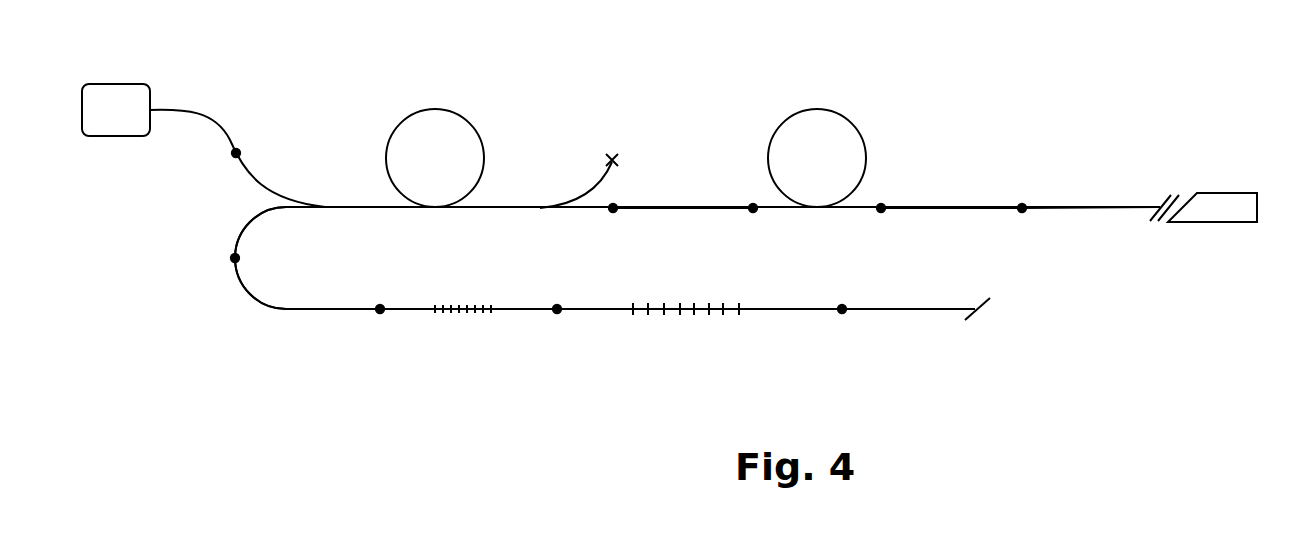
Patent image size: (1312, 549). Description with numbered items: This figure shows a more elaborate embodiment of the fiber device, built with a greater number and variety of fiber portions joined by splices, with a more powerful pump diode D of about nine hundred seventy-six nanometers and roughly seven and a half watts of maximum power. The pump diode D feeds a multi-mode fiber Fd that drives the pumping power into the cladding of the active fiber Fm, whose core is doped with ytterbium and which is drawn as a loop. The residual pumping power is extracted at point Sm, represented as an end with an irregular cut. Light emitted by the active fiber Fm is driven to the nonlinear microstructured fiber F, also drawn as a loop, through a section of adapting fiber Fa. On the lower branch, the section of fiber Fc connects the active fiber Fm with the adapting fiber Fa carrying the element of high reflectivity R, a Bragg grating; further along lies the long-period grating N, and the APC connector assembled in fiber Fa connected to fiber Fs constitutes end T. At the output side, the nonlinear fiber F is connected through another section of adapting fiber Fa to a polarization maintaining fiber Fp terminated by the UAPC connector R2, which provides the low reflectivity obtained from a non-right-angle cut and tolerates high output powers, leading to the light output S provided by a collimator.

The pump diode D is at (116, 83).
The multi-mode fiber Fd is at (237, 135).
The active fiber Fm is at (435, 135).
The residual pump extraction point Sm is at (595, 158).
The nonlinear microstructured fiber F is at (817, 135).
The adapting fiber Fa is at (701, 241).
The polarization maintaining fiber Fp is at (1100, 194).
The UAPC connector R2 is at (1212, 192).
The light output S is at (1278, 208).
The connecting fiber section Fc is at (306, 258).
The high reflectivity element R is at (462, 336).
The fiber Fs is at (699, 287).
The long-period grating N is at (686, 335).
The end T is at (979, 338).